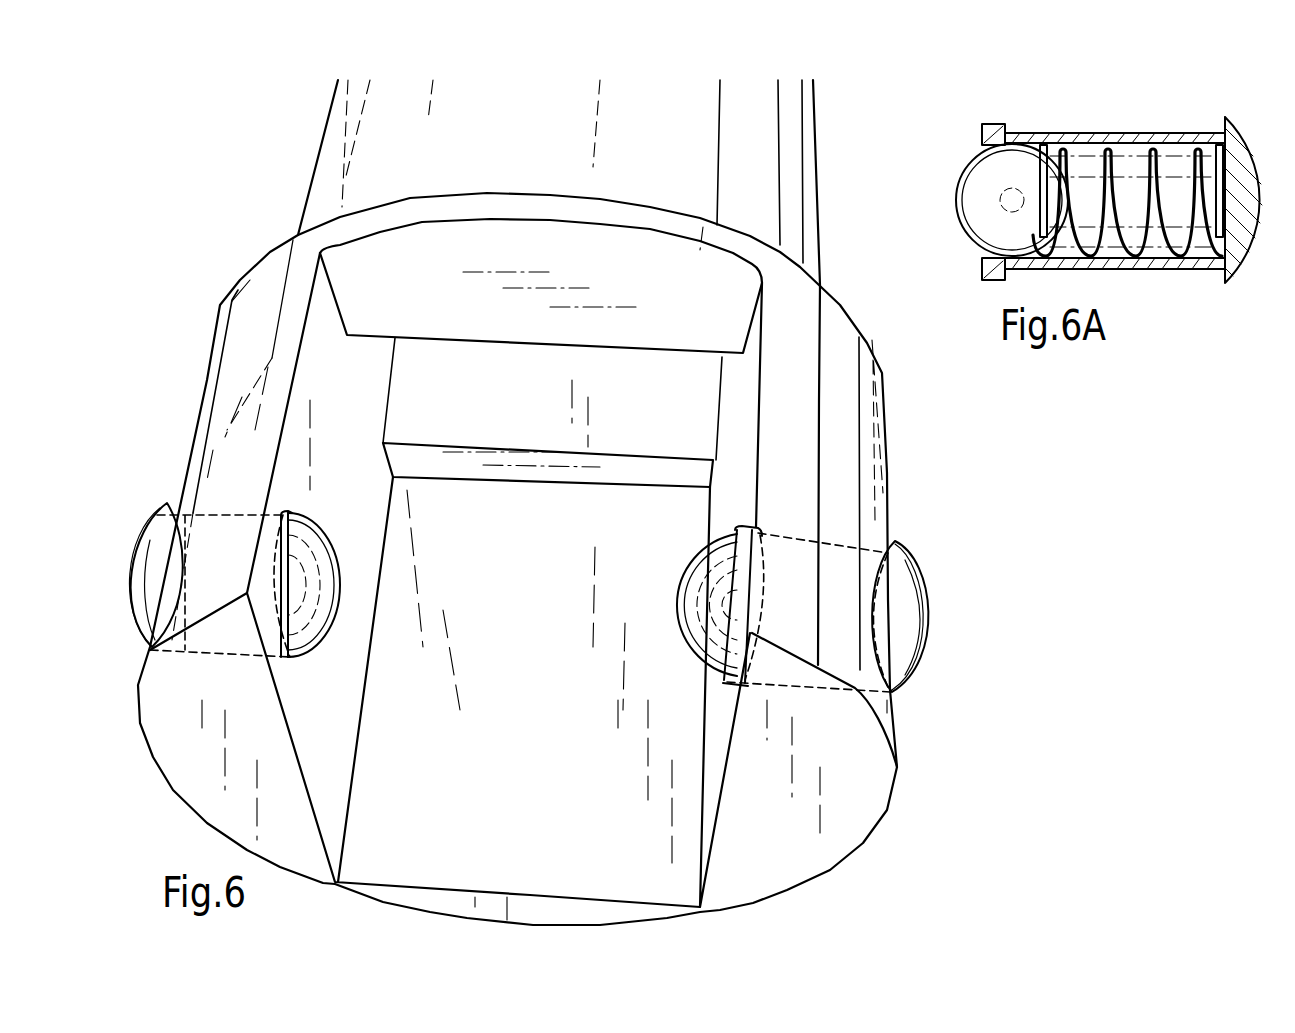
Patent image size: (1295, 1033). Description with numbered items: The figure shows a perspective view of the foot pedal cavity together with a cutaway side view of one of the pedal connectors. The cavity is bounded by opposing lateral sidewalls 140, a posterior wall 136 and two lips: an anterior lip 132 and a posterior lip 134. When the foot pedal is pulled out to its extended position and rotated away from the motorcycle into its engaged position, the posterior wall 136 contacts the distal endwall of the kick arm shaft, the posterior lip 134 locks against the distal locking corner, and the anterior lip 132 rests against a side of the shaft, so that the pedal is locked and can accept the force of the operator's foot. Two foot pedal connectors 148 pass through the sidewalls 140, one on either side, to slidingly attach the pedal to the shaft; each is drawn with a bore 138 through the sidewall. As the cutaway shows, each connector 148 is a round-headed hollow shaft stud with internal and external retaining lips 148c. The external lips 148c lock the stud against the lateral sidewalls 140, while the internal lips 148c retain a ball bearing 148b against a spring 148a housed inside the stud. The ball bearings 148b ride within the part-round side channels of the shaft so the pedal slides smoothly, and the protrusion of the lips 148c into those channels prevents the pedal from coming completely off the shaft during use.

In FIG. 6, the anterior lip 132 is at (360, 247).
In FIG. 6, the posterior lip 134 is at (700, 475).
In FIG. 6, the posterior wall 136 is at (600, 847).
In FIG. 6, the bore 138 is at (185, 537).
In FIG. 6, the lateral sidewalls 140 is at (318, 330).
In FIG. 6, the foot pedal connector 148 is at (153, 513).
In FIG. 6A, the foot pedal connector 148 is at (1218, 319).
In FIG. 6A, the spring 148a is at (1102, 143).
In FIG. 6A, the ball bearing 148b is at (975, 185).
In FIG. 6, the retaining lips 148c is at (333, 653).
In FIG. 6A, the retaining lips 148c is at (985, 123).